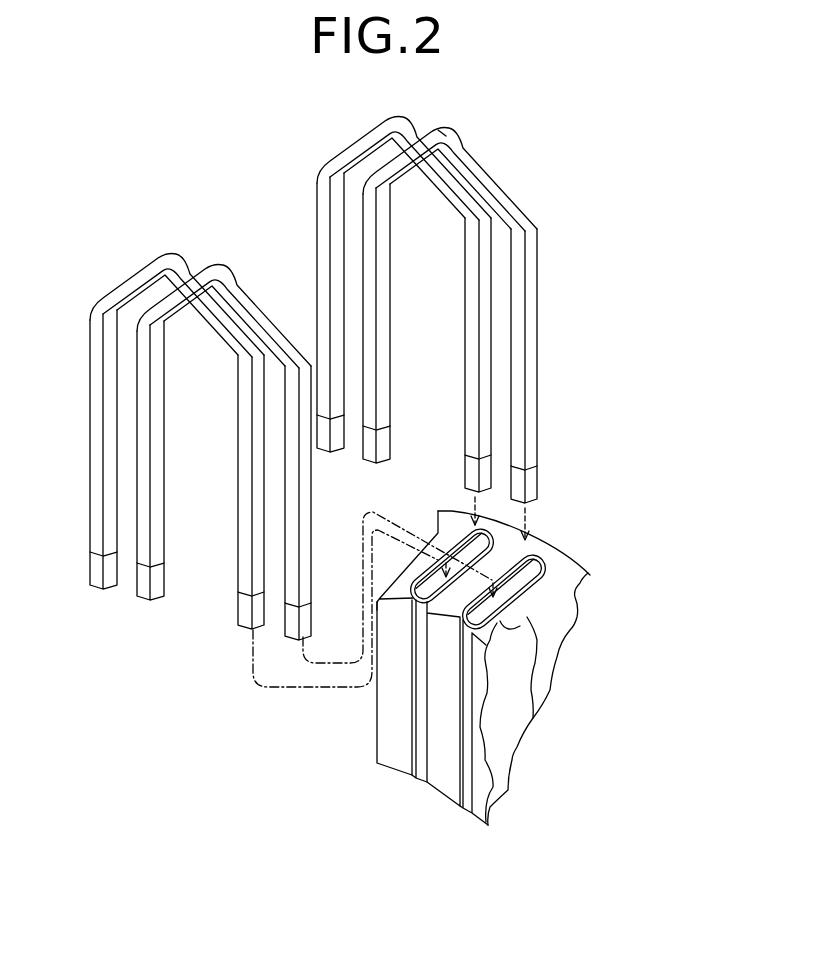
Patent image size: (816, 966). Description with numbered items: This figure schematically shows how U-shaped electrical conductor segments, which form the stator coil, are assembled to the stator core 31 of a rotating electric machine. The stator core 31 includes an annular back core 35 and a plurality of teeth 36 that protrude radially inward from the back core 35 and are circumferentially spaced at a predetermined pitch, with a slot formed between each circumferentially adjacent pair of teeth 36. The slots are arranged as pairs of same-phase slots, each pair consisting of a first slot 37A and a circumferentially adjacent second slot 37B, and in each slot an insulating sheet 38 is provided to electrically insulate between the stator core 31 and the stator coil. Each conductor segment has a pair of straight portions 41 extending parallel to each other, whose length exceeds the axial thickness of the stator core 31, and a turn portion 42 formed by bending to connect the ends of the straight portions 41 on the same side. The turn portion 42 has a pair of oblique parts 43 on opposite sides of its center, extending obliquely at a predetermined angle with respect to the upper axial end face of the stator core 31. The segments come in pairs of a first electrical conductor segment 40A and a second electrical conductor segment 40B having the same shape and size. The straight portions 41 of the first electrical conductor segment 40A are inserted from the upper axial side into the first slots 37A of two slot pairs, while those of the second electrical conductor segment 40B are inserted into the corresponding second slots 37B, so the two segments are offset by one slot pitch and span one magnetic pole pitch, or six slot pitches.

The stator core 31 is at (527, 678).
The back core 35 is at (573, 558).
The teeth 36 is at (460, 600).
The first slot 37A is at (460, 803).
The second slot 37B is at (413, 757).
The insulating sheet 38 is at (530, 617).
The first electrical conductor segment 40A is at (377, 371).
The second electrical conductor segment 40B is at (136, 276).
The straight portions 41 is at (290, 472).
The turn portion 42 is at (452, 172).
The oblique parts 43 is at (477, 177).